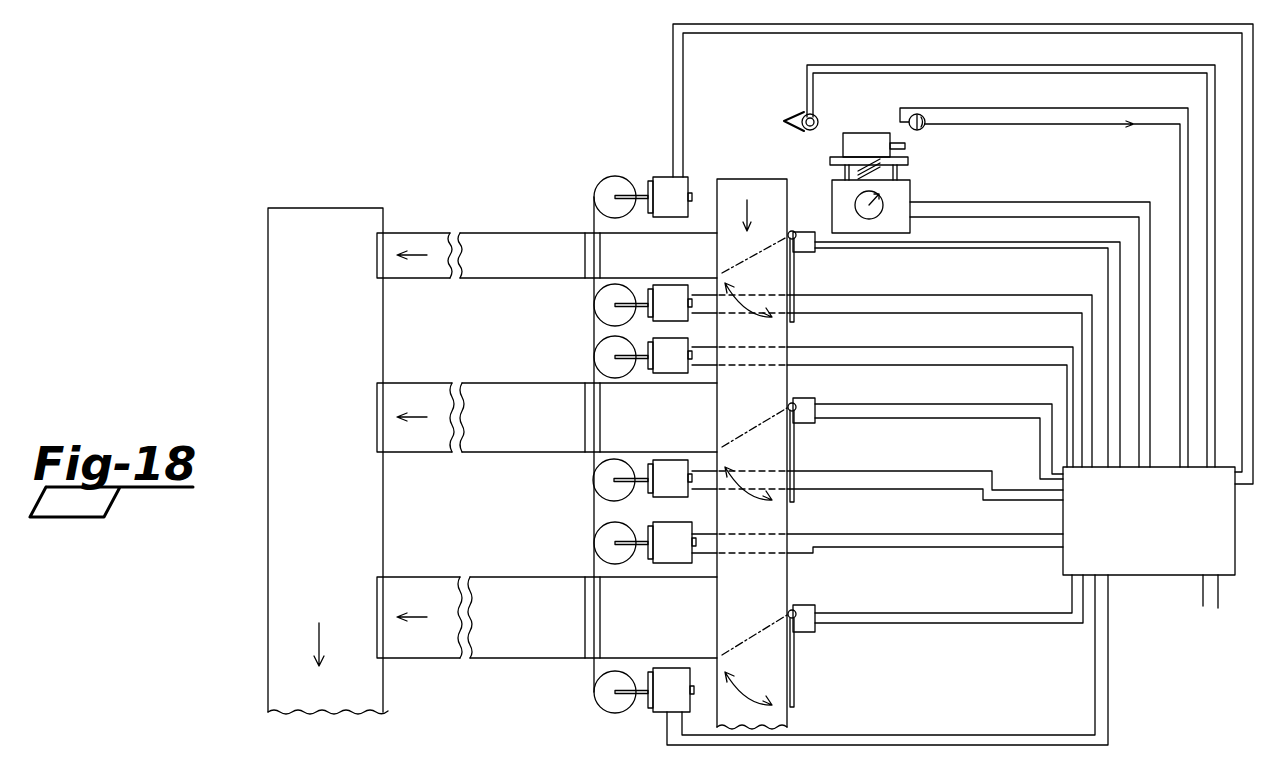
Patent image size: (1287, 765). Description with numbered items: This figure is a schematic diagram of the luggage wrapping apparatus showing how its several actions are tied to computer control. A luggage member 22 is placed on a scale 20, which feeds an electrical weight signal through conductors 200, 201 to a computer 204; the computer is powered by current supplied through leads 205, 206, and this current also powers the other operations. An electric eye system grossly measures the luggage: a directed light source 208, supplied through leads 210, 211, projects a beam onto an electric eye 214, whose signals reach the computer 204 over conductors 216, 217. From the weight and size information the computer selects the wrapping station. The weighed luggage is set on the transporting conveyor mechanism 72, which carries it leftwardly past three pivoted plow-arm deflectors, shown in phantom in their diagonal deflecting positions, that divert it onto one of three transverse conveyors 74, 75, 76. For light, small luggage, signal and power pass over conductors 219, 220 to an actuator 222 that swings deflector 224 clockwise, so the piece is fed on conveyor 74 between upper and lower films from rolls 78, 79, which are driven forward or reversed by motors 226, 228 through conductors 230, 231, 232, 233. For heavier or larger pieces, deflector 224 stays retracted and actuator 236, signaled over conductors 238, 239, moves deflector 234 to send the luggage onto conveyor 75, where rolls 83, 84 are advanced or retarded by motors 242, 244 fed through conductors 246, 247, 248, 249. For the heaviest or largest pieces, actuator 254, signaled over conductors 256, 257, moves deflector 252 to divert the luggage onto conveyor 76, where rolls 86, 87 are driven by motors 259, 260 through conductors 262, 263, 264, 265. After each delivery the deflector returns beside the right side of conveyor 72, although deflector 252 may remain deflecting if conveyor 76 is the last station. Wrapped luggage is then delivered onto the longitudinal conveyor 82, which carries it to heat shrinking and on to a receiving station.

The scale 20 is at (912, 194).
The luggage member 22 is at (870, 133).
The transporting conveyor mechanism 72 is at (760, 180).
The transverse conveyor 74 is at (525, 277).
The transverse conveyor 75 is at (525, 383).
The transverse conveyor 76 is at (522, 577).
The upper film roll 78 is at (612, 178).
The lower film roll 79 is at (594, 311).
The longitudinal conveyor 82 is at (270, 550).
The film roll 83 is at (596, 347).
The film roll 84 is at (598, 494).
The film roll 86 is at (592, 540).
The film roll 87 is at (594, 684).
The conductor 200 is at (1012, 203).
The conductor 201 is at (1073, 221).
The computer 204 is at (1245, 546).
The lead 205 is at (1203, 606).
The lead 206 is at (1218, 608).
The directed light source 208 is at (801, 116).
The lead 210 is at (807, 72).
The lead 211 is at (866, 74).
The electric eye 214 is at (922, 130).
The conductor 216 is at (1030, 124).
The conductor 217 is at (1014, 110).
The conductor 219 is at (1008, 250).
The conductor 220 is at (1008, 243).
The actuator 222 is at (818, 254).
The deflector 224 is at (797, 282).
The motor 226 is at (660, 177).
The motor 228 is at (658, 286).
The conductor 230 is at (673, 62).
The conductor 231 is at (683, 66).
The conductor 232 is at (955, 313).
The conductor 233 is at (941, 298).
The deflector 234 is at (796, 450).
The actuator 236 is at (816, 400).
The conductor 238 is at (910, 404).
The conductor 239 is at (908, 418).
The motor 242 is at (676, 340).
The motor 244 is at (664, 496).
The conductor 246 is at (1000, 349).
The conductor 247 is at (965, 367).
The conductor 248 is at (900, 470).
The conductor 249 is at (900, 490).
The deflector 252 is at (797, 678).
The actuator 254 is at (812, 612).
The conductor 256 is at (904, 613).
The conductor 257 is at (910, 623).
The motor 259 is at (674, 522).
The motor 260 is at (657, 713).
The conductor 262 is at (952, 535).
The conductor 263 is at (957, 546).
The conductor 264 is at (880, 735).
The conductor 265 is at (895, 746).